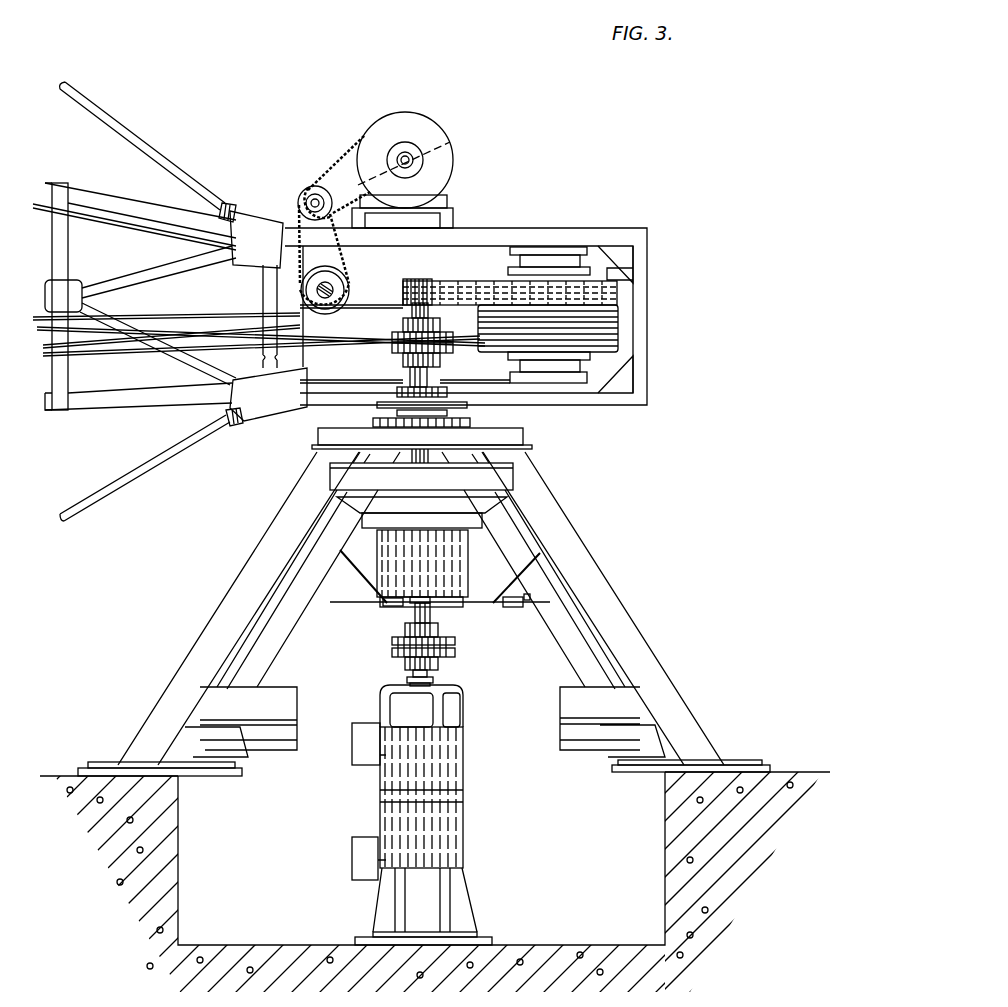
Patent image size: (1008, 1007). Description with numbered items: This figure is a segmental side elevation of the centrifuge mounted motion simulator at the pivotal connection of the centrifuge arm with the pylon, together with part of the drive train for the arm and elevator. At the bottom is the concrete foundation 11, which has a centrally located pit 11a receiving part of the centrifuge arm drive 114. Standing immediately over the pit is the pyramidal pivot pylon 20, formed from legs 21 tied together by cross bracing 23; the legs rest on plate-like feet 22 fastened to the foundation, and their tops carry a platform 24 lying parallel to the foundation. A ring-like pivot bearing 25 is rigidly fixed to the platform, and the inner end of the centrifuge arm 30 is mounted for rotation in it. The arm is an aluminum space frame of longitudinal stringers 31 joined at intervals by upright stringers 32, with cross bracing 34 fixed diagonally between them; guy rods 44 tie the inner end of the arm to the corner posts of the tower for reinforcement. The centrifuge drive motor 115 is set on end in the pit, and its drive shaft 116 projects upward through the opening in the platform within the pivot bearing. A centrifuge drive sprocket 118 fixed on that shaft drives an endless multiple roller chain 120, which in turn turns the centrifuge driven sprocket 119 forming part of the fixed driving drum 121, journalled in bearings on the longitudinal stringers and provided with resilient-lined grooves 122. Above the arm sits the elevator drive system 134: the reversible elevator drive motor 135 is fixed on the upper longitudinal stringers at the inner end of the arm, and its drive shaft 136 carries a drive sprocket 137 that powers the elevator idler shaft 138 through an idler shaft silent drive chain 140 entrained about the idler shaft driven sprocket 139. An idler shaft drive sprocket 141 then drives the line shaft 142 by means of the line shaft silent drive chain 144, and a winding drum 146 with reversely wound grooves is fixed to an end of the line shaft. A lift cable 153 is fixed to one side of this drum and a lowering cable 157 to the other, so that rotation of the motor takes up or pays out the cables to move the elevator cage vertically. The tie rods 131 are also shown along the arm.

The foundation 11 is at (58, 781).
The pit 11a is at (178, 913).
The pivot pylon 20 is at (590, 553).
The legs 21 is at (210, 625).
The feet 22 is at (98, 763).
The cross bracing 23 is at (288, 694).
The platform 24 is at (522, 444).
The pivot bearing 25 is at (373, 423).
The centrifuge arm 30 is at (93, 412).
The longitudinal stringers 31 is at (116, 206).
The upright stringers 32 is at (68, 379).
The cross bracing 34 is at (147, 286).
The guy rods 44 is at (110, 115).
The centrifuge arm drive 114 is at (354, 793).
The centrifuge drive motor 115 is at (455, 838).
The centrifuge drive shaft 116 is at (428, 276).
The centrifuge drive sprocket 118 is at (405, 281).
The centrifuge driven sprocket 119 is at (620, 273).
The centrifuge drive multiple roller chain 120 is at (458, 291).
The fixed driving drum 121 is at (606, 356).
The grooves 122 is at (602, 335).
The tie rods 131 is at (197, 316).
The elevator drive system 134 is at (342, 147).
The elevator drive motor 135 is at (426, 124).
The elevator drive shaft 136 is at (414, 164).
The drive sprocket 137 is at (424, 151).
The elevator idler shaft 138 is at (307, 198).
The idler shaft driven sprocket 139 is at (305, 186).
The idler shaft silent drive chain 140 is at (342, 172).
The idler shaft drive sprocket 141 is at (298, 212).
The line shaft 142 is at (343, 291).
The line shaft silent drive chain 144 is at (341, 258).
The winding drum 146 is at (324, 306).
The lift cable 153 is at (92, 218).
The lowering cable 157 is at (118, 343).